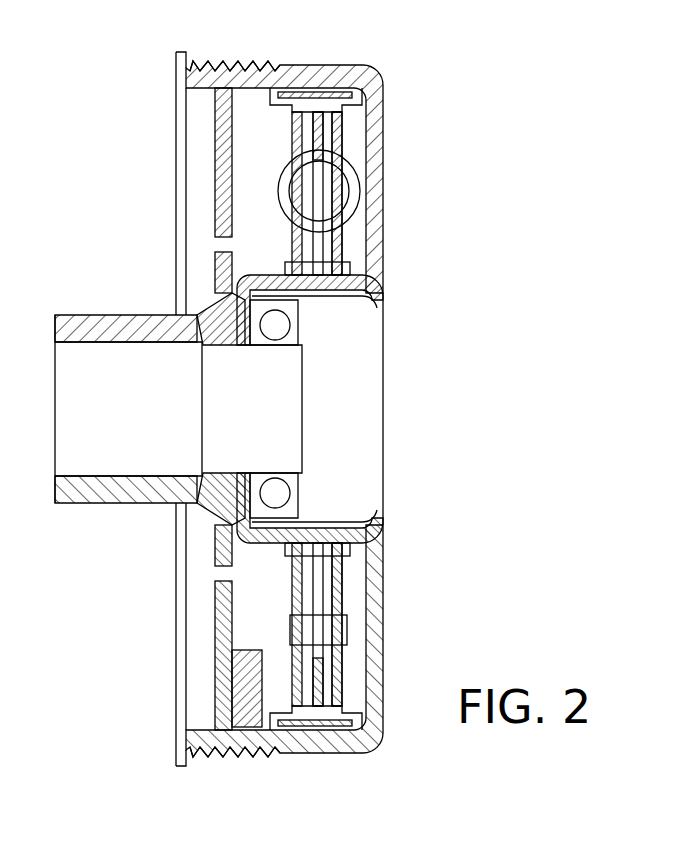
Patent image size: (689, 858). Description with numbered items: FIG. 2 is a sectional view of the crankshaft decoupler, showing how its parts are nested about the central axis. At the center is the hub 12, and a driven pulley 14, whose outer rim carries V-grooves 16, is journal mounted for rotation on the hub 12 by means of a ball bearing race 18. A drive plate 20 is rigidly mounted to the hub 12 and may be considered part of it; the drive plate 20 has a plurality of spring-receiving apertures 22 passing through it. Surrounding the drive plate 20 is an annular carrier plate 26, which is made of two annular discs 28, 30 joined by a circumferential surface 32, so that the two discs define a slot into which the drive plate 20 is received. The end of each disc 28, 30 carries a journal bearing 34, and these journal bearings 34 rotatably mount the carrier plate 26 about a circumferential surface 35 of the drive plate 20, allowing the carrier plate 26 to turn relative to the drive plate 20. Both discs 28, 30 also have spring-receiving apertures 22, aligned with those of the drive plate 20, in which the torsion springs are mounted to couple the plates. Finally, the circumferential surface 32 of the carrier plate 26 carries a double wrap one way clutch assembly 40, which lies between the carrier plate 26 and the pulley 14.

The hub 12 is at (95, 315).
The driven pulley 14 is at (383, 170).
The V-grooves 16 is at (212, 64).
The ball bearing race 18 is at (303, 328).
The drive plate 20 is at (378, 284).
The spring-receiving apertures 22 is at (330, 136).
The annular carrier plate 26 is at (337, 120).
The annular disc 28 is at (330, 243).
The annular disc 30 is at (302, 242).
The circumferential surface 32 is at (294, 88).
The journal bearing 34 is at (368, 290).
The circumferential surface 35 is at (235, 250).
The double wrap one way clutch assembly 40 is at (333, 88).